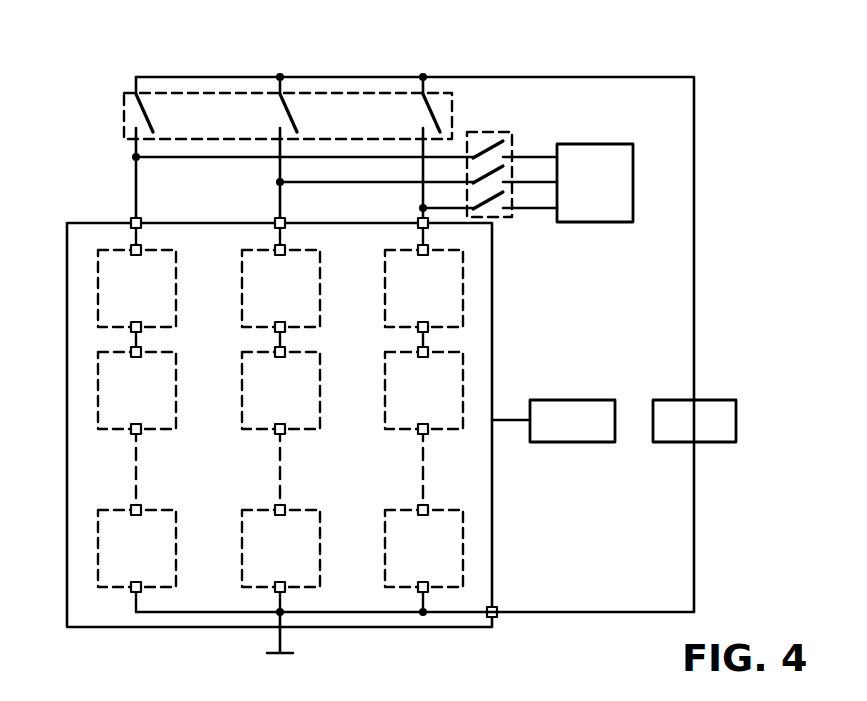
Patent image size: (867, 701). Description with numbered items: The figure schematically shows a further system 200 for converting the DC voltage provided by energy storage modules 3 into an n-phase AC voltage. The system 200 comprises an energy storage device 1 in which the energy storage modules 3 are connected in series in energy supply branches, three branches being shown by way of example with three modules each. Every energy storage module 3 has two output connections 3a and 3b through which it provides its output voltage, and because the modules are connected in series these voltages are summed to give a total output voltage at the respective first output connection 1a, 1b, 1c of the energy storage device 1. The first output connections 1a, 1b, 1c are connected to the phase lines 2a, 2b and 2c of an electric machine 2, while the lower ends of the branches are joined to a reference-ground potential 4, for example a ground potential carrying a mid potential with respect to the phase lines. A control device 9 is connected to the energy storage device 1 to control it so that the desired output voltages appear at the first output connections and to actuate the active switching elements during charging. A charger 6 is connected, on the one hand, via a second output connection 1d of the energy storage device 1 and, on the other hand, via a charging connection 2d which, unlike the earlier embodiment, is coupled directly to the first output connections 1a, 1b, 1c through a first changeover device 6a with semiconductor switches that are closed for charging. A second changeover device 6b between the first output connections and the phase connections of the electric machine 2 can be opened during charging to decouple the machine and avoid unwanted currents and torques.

The system 200 is at (84, 150).
The energy storage device 1 is at (493, 478).
The first output connection 1a is at (130, 221).
The first output connection 1b is at (274, 221).
The first output connection 1c is at (417, 221).
The second output connection 1d is at (498, 617).
The electric machine 2 is at (595, 223).
The phase line 2a is at (527, 156).
The phase line 2b is at (538, 180).
The phase line 2c is at (545, 211).
The charging connection 2d is at (594, 77).
The energy storage module 3 is at (177, 289).
The output connection 3a is at (274, 247).
The output connection 3b is at (274, 328).
The reference-ground potential 4 is at (208, 613).
The charger 6 is at (720, 399).
The first changeover device 6a is at (336, 93).
The second changeover device 6b is at (491, 131).
The control device 9 is at (570, 399).